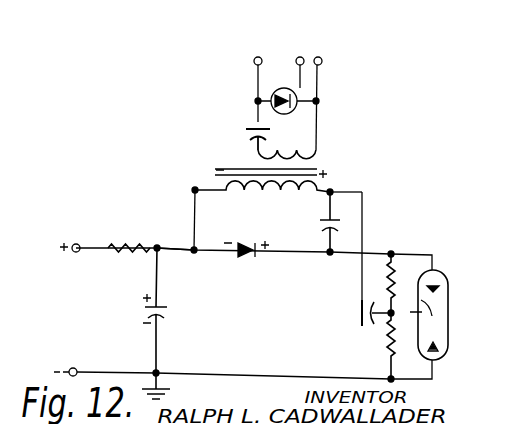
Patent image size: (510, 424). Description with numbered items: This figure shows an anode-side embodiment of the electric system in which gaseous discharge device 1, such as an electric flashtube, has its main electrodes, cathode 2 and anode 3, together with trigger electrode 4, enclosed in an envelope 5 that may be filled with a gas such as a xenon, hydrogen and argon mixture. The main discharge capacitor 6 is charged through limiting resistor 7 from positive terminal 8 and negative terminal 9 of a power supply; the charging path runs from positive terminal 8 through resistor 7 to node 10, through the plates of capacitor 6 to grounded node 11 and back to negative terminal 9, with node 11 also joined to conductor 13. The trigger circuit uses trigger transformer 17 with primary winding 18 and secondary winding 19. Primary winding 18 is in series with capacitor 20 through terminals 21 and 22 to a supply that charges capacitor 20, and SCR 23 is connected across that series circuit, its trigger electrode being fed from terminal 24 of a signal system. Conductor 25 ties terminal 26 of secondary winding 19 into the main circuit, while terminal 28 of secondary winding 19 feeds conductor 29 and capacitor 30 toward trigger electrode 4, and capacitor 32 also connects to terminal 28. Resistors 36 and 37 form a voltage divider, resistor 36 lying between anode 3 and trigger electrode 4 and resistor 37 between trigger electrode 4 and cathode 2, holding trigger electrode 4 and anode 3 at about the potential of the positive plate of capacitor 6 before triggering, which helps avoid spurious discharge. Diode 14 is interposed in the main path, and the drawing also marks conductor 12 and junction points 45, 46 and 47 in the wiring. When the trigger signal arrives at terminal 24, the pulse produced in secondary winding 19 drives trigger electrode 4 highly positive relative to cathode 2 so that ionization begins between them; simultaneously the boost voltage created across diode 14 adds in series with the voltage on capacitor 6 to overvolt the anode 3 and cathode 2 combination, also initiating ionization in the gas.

The gaseous discharge device 1 is at (410, 301).
The cathode 2 is at (427, 345).
The anode 3 is at (430, 285).
The trigger electrode 4 is at (399, 283).
The envelope 5 is at (426, 351).
The main discharge capacitor 6 is at (168, 318).
The limiting resistor 7 is at (113, 245).
The positive terminal 8 is at (74, 244).
The negative terminal 9 is at (73, 367).
The node 10 is at (154, 246).
The node 11 is at (153, 368).
The conductor 12 is at (161, 247).
The conductor 13 is at (247, 370).
The diode 14 is at (246, 246).
The trigger transformer 17 is at (228, 168).
The primary winding 18 is at (281, 153).
The secondary winding 19 is at (255, 193).
The capacitor 20 is at (251, 128).
The terminal 21 is at (254, 58).
The terminal 22 is at (321, 58).
The SCR 23 is at (280, 89).
The terminal 24 is at (300, 57).
The conductor 25 is at (192, 208).
The terminal 26 is at (193, 187).
The terminal 28 is at (334, 189).
The conductor 29 is at (360, 292).
The capacitor 30 is at (362, 323).
The capacitor 32 is at (322, 226).
The resistor 36 is at (359, 299).
The resistor 37 is at (387, 345).
The junction 45 is at (190, 245).
The junction 46 is at (325, 257).
The junction 47 is at (382, 251).